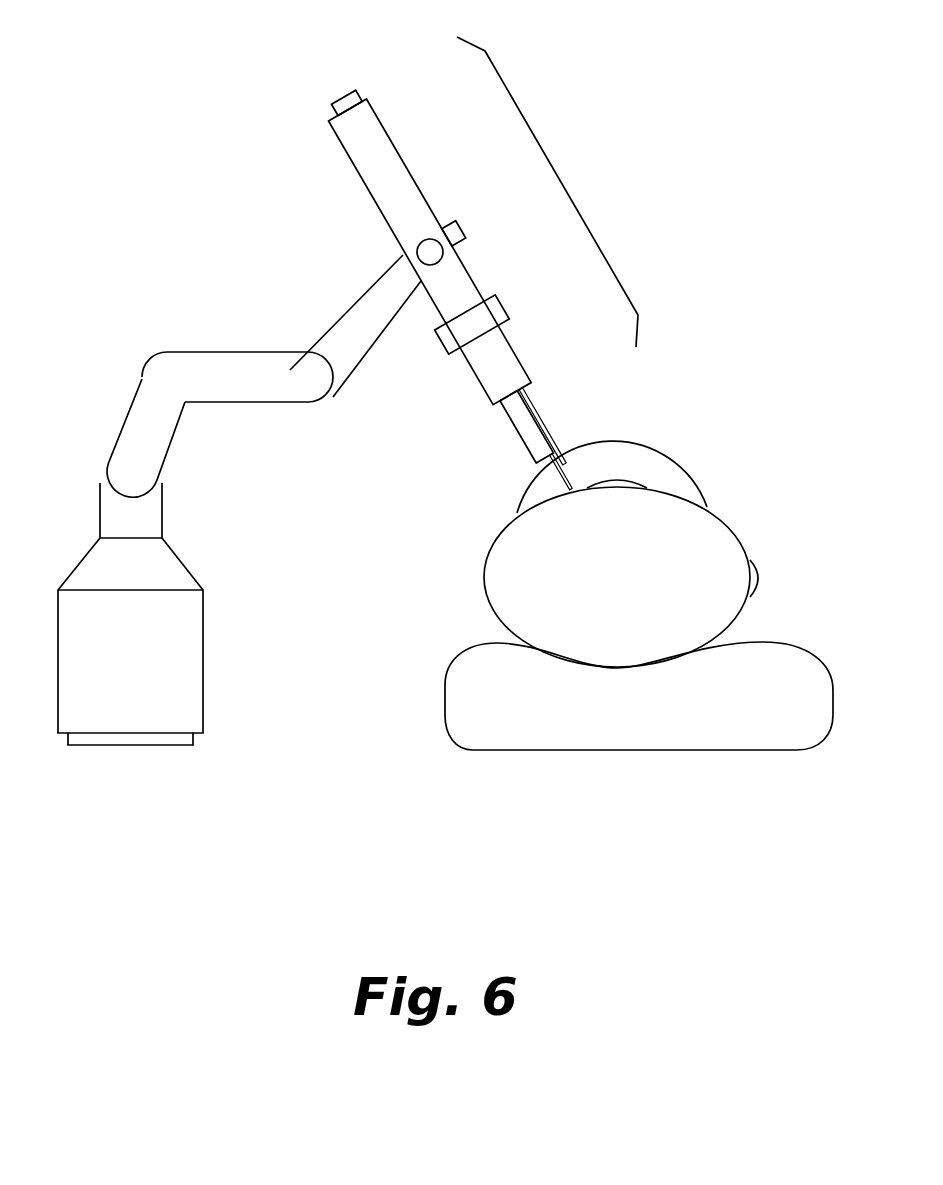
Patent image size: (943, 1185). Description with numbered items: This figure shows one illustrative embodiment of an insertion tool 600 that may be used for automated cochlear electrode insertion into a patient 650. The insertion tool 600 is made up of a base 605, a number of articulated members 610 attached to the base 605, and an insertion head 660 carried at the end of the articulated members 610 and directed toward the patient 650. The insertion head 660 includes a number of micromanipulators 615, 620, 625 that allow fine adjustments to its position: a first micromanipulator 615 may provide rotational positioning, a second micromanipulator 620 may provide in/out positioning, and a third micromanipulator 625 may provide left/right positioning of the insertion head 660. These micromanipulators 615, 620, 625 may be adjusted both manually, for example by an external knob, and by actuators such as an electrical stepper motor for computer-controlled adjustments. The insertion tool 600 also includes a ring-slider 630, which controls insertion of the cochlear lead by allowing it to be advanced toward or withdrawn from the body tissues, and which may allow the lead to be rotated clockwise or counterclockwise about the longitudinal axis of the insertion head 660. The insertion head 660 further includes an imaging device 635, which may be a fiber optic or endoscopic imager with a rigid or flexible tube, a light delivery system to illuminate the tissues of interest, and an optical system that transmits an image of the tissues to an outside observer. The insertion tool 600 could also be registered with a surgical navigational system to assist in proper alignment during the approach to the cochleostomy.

The insertion tool 600 is at (183, 168).
The base 605 is at (177, 663).
The articulated members 610 is at (244, 392).
The first micromanipulator 615 is at (417, 243).
The second micromanipulator 620 is at (341, 98).
The third micromanipulator 625 is at (457, 228).
The ring-slider 630 is at (490, 313).
The imaging device 635 is at (545, 413).
The patient 650 is at (710, 525).
The insertion head 660 is at (567, 192).